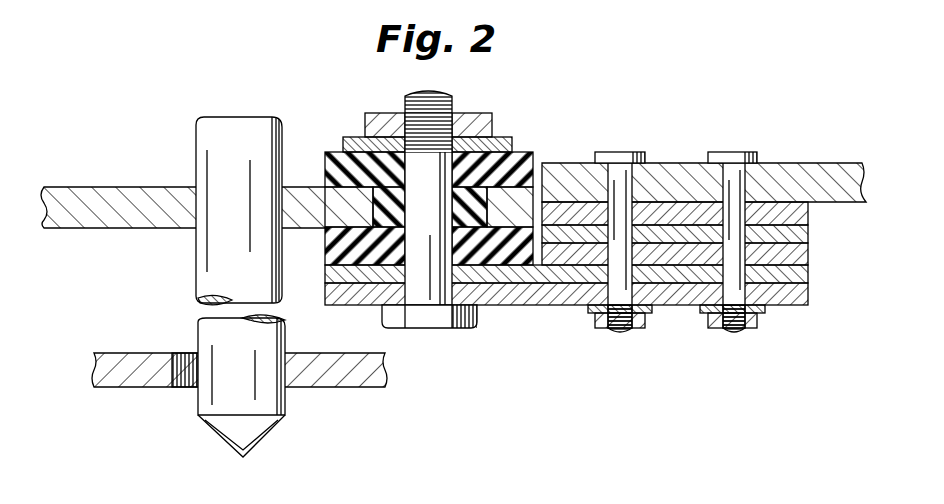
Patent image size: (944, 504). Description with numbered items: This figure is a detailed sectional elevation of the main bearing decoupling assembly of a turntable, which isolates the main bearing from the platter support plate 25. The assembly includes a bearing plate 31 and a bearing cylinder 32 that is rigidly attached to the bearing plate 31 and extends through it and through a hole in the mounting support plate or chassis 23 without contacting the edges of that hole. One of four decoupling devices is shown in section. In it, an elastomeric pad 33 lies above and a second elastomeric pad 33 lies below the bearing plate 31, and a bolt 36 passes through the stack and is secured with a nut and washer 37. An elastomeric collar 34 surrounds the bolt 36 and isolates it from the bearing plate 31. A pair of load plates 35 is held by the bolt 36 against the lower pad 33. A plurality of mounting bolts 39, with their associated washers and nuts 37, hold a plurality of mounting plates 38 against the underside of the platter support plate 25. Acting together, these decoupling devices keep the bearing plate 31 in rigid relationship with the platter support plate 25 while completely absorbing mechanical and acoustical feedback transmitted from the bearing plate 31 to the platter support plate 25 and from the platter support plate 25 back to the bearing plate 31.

The mounting support plate 23 is at (120, 387).
The platter support plate 25 is at (786, 163).
The bearing plate 31 is at (72, 230).
The bearing cylinder 32 is at (196, 148).
The elastomeric pad 33 is at (533, 160).
The elastomeric collar 34 is at (396, 212).
The load plates 35 is at (808, 298).
The bolt 36 is at (437, 322).
The nut and washer 37 is at (507, 137).
The mounting plates 38 is at (808, 256).
The mounting bolts 39 is at (735, 334).